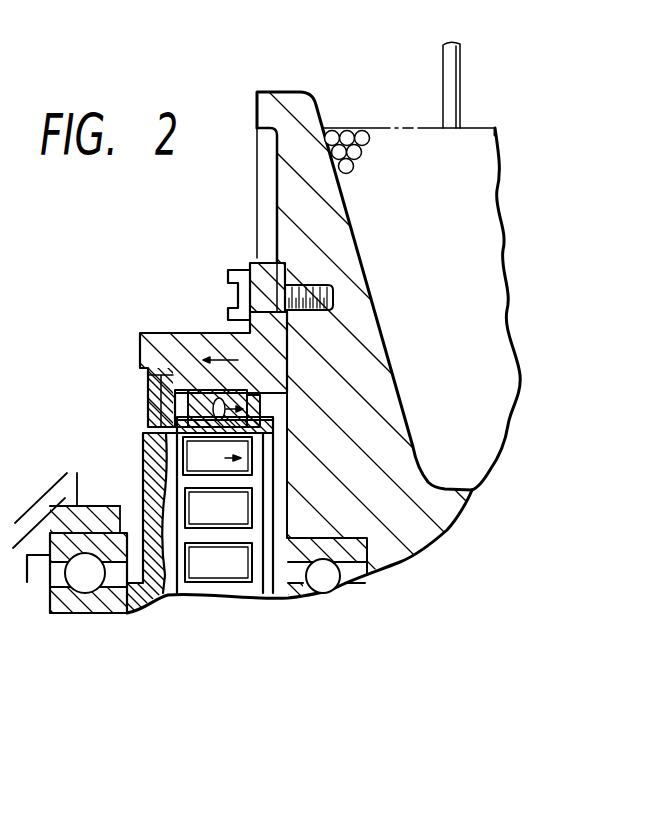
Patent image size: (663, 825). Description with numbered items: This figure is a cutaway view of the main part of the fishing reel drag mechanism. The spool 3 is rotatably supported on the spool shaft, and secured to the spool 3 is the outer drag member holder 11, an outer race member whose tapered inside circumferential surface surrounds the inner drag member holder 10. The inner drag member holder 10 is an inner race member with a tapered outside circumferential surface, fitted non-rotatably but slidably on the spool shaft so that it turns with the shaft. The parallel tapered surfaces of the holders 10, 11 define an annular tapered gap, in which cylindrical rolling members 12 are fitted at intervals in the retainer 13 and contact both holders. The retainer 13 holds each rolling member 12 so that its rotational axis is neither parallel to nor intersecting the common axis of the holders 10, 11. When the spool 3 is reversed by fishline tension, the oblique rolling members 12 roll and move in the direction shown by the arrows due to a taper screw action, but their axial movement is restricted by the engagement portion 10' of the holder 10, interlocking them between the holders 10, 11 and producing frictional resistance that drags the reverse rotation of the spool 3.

The spool 3 is at (293, 90).
The drag member holder (outer race member) 11 is at (192, 345).
The retainer 13 is at (190, 480).
The drag member holder (inner race member) 10 is at (173, 523).
The engagement portion 10' is at (322, 595).
The cylindrical rolling members 12 is at (240, 513).